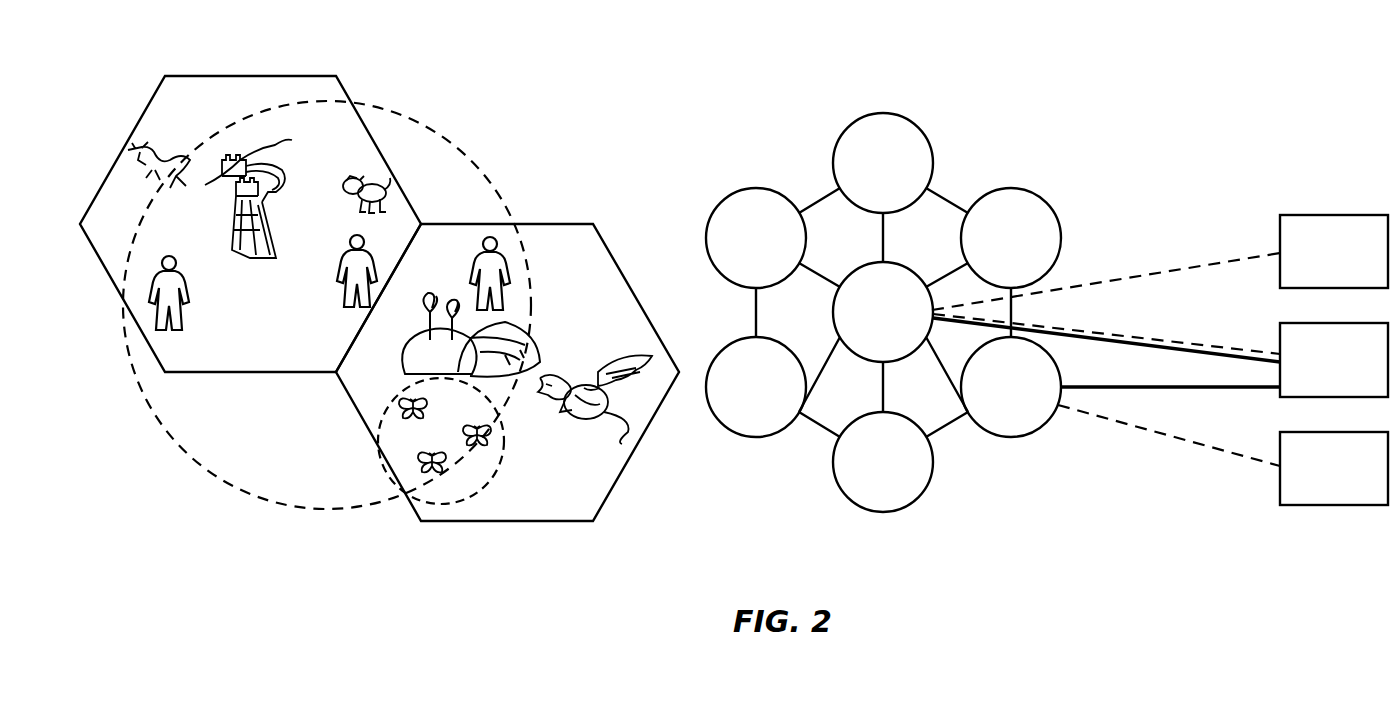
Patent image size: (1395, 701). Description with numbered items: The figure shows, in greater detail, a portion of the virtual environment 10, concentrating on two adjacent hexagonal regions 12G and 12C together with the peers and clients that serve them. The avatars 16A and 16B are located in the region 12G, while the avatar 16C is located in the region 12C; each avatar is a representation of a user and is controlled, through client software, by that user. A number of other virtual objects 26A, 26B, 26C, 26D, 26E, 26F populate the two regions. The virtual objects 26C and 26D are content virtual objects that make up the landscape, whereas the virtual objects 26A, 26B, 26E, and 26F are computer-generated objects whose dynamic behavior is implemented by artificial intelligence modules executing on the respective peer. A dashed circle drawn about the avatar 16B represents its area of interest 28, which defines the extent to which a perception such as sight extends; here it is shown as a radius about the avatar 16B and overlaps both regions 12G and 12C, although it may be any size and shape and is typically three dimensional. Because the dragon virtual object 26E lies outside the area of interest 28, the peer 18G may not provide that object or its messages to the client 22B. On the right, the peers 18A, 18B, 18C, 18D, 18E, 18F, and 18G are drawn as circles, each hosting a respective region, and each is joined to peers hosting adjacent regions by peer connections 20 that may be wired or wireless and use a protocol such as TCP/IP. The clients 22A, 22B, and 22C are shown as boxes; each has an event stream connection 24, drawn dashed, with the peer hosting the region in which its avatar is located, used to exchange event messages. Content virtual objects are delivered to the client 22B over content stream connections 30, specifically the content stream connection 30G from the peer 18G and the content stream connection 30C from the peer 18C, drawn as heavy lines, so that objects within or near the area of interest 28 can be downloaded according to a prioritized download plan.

The virtual environment 10 is at (452, 68).
The region 12G is at (215, 104).
The region 12C is at (593, 252).
The avatar 16A is at (181, 320).
The avatar 16B is at (342, 258).
The avatar 16C is at (503, 297).
The peer 18A is at (861, 153).
The peer 18B is at (989, 228).
The peer 18C is at (989, 377).
The peer 18D is at (861, 452).
The peer 18E is at (734, 377).
The peer 18F is at (734, 228).
The peer 18G is at (861, 302).
The peer connection 20 is at (950, 198).
The client 22A is at (1312, 263).
The client 22B is at (1312, 372).
The client 22C is at (1312, 481).
The event stream connection 24 is at (1158, 268).
The virtual object 26A is at (165, 185).
The virtual object 26B is at (388, 182).
The content virtual object 26C is at (292, 140).
The content virtual object 26D is at (530, 335).
The dragon virtual object 26E is at (593, 366).
The virtual object 26F is at (499, 470).
The area of interest 28 is at (498, 192).
The content stream connection 30 is at (1222, 358).
The content stream connection 30G is at (1140, 350).
The content stream connection 30C is at (1196, 390).